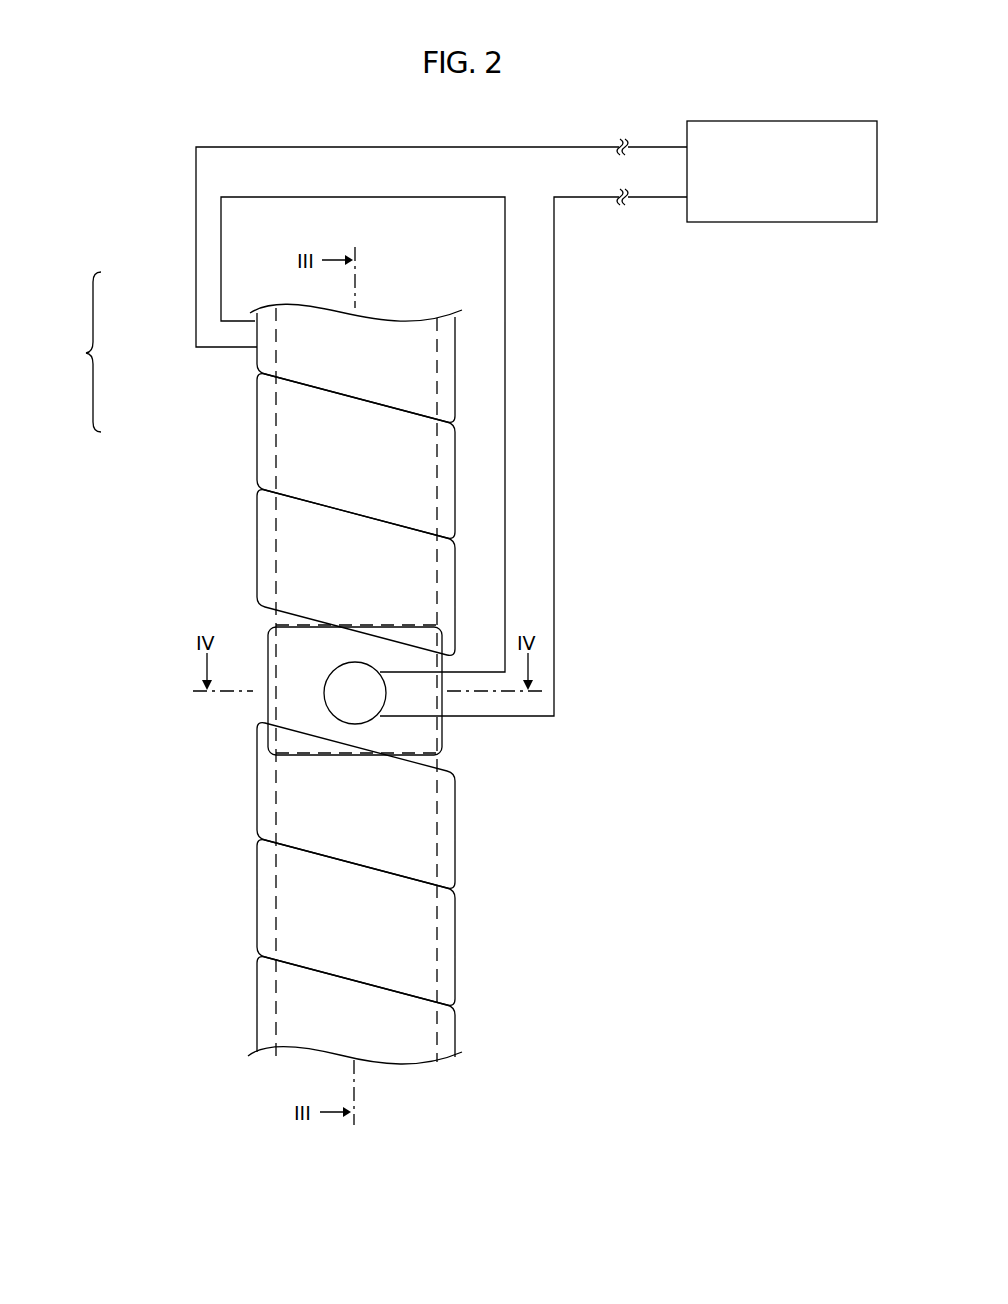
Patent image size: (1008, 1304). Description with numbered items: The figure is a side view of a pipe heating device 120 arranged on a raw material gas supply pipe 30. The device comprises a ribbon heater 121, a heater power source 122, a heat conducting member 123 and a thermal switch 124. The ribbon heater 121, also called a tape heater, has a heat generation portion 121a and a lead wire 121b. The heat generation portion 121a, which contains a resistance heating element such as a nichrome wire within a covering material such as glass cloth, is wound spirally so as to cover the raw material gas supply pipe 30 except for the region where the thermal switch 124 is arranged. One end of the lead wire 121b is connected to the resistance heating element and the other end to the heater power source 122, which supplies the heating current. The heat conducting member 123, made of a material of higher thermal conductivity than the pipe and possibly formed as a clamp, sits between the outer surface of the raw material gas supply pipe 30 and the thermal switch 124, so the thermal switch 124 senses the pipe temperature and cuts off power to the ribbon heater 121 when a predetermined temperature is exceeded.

The raw material gas supply pipe 30 is at (437, 762).
The pipe heating device 120 is at (210, 509).
The ribbon heater 121 is at (73, 352).
The heat generation portion 121a is at (257, 411).
The lead wire 121b is at (196, 288).
The heater power source 122 is at (783, 121).
The heat conducting member 123 is at (268, 697).
The thermal switch 124 is at (327, 705).